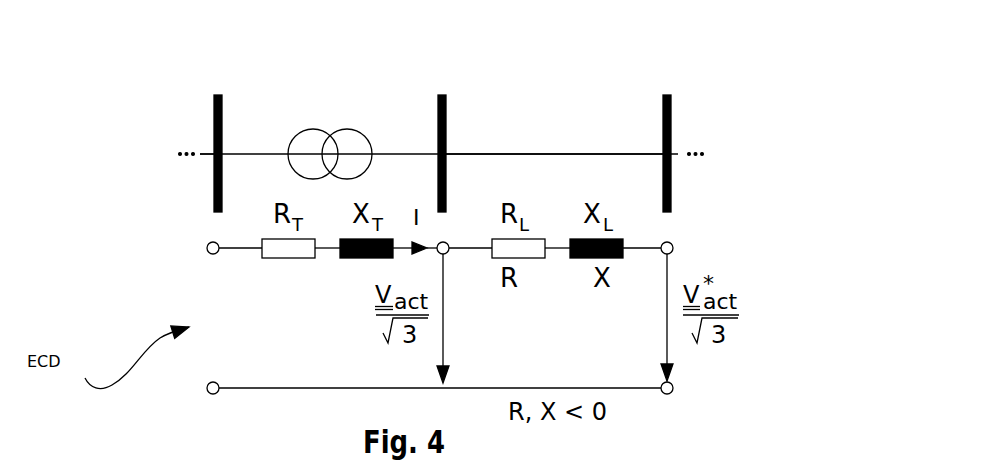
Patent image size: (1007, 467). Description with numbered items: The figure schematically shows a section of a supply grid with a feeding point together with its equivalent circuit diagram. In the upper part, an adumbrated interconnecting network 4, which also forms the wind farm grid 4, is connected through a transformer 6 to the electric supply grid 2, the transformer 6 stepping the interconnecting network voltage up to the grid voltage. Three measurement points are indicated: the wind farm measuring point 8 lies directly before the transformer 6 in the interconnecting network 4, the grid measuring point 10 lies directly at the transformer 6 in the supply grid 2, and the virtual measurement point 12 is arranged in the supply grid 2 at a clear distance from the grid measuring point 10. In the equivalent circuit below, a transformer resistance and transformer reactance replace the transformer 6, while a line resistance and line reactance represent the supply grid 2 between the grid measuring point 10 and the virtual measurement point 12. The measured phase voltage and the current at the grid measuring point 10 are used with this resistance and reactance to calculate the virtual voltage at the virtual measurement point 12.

The electric supply grid 2 is at (547, 115).
The interconnecting network 4 is at (201, 145).
The transformer 6 is at (336, 124).
The wind farm measuring point 8 is at (221, 90).
The grid measuring point 10 is at (442, 90).
The virtual measurement point 12 is at (668, 90).